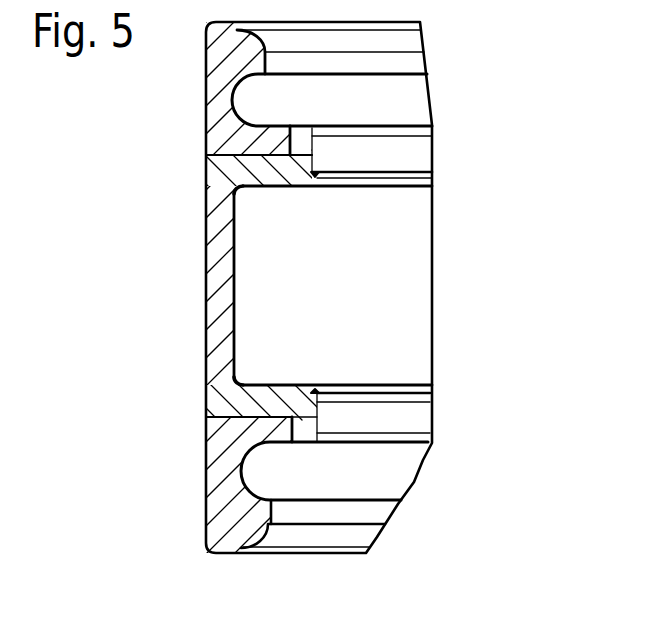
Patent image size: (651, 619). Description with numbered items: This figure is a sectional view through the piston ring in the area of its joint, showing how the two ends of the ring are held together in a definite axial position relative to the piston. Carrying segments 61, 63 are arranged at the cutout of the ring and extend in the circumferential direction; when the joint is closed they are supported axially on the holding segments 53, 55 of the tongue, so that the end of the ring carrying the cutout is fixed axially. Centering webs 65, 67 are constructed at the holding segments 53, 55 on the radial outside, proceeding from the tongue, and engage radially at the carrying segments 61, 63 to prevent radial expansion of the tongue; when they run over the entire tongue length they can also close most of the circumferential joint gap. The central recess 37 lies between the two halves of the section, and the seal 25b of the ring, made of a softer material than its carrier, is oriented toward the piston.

The carrying segment 61 is at (263, 148).
The holding segment 53 is at (236, 158).
The seal 25b is at (316, 178).
The central recess 37 is at (237, 303).
The holding segment 55 is at (248, 401).
The carrying segment 63 is at (236, 435).
The centering web 65 is at (313, 156).
The centering web 67 is at (322, 420).